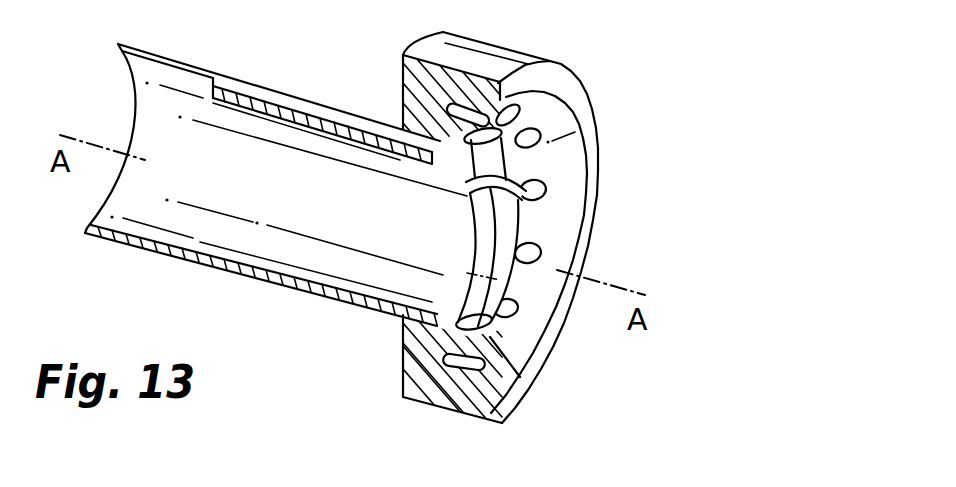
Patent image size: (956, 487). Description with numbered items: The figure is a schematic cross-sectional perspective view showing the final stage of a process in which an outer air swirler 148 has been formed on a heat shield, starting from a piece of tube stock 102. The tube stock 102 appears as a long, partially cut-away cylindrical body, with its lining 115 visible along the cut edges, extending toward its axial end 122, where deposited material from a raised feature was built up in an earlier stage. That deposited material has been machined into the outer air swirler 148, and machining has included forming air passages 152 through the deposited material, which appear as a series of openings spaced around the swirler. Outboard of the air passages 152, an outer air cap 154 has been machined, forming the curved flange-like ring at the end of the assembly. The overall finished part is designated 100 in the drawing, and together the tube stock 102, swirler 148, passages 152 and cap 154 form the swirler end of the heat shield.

The fluid delivery assembly 100 is at (700, 168).
The piece of tube stock 102 is at (252, 91).
The liner 115 is at (276, 185).
The axial end 122 is at (462, 253).
The outer air swirler 148 is at (489, 55).
The outer air cap 154 is at (544, 242).
The air passages 152 is at (603, 134).